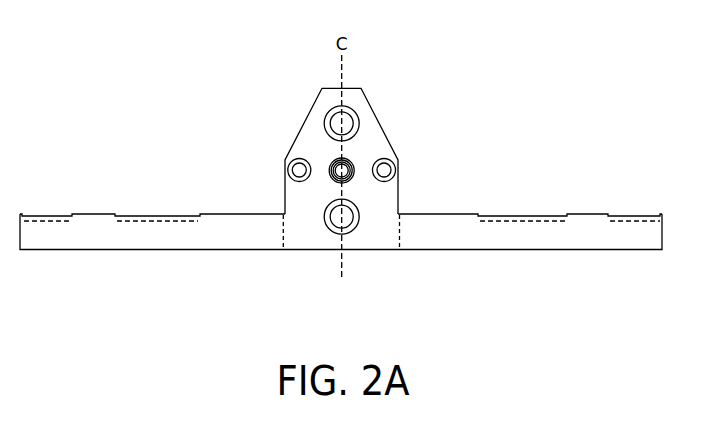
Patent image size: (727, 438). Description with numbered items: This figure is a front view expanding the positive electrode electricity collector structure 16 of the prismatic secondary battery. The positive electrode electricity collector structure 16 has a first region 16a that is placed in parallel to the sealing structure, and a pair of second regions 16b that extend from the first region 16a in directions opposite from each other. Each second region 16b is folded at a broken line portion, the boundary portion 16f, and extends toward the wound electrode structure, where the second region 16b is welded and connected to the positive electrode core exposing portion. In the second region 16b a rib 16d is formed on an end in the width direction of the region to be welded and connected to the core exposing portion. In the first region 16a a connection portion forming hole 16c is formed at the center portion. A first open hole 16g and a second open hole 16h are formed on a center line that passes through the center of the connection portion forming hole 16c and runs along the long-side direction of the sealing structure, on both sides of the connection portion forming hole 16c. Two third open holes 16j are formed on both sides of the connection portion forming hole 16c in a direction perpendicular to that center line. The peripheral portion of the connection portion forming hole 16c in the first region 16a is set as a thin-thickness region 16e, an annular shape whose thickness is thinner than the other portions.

The positive electrode electricity collector structure 16 is at (48, 113).
The first region 16a is at (301, 137).
The second regions 16b is at (155, 238).
The connection portion forming hole 16c is at (351, 158).
The rib 16d is at (43, 218).
The thin-thickness region 16e is at (353, 163).
The boundary portion 16f is at (283, 231).
The first open hole 16g is at (332, 122).
The second open hole 16h is at (347, 220).
The third open holes 16j is at (297, 170).